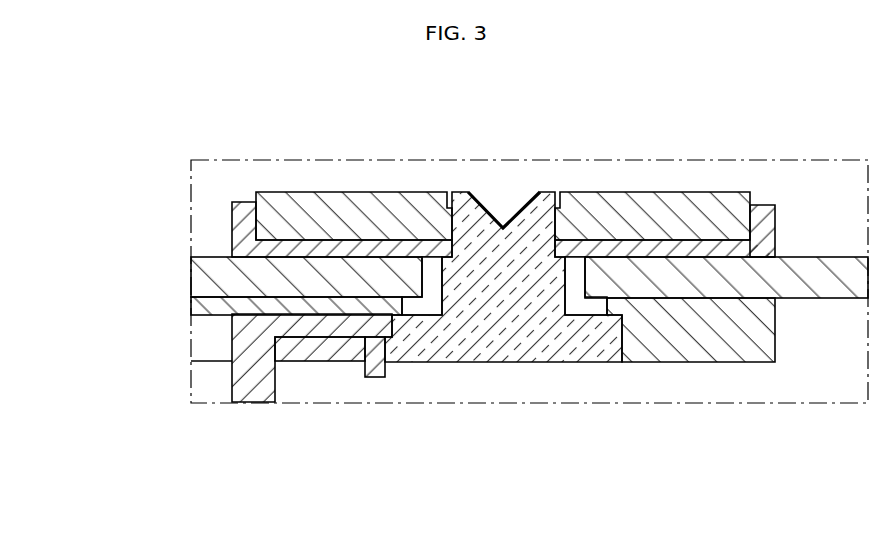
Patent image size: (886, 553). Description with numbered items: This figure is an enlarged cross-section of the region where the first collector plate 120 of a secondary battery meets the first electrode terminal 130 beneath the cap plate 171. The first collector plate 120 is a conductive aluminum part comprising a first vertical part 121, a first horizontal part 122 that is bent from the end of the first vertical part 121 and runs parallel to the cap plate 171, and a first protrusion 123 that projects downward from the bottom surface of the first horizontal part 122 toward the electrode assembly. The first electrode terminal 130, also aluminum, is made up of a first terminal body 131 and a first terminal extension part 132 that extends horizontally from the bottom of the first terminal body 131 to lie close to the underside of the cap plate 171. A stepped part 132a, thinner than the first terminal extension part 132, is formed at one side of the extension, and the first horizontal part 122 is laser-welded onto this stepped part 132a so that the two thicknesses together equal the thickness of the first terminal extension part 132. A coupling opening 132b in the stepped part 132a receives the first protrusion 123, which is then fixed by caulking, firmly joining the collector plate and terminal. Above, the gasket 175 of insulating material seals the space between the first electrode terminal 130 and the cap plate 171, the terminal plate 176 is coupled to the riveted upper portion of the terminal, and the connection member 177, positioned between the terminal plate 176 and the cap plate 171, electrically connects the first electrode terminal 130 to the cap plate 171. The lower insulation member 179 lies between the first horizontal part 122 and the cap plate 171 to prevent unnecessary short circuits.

The first collector plate 120 is at (213, 353).
The first vertical part 121 is at (253, 388).
The first horizontal part 122 is at (340, 324).
The first protrusion 123 is at (368, 347).
The first electrode terminal 130 is at (463, 364).
The first terminal body 131 is at (503, 268).
The first terminal extension part 132 is at (417, 338).
The stepped part 132a is at (327, 355).
The coupling opening 132b is at (368, 357).
The cap plate 171 is at (212, 265).
The gasket 175 is at (577, 268).
The terminal plate 176 is at (670, 202).
The connection member 177 is at (761, 212).
The lower insulation member 179 is at (703, 343).